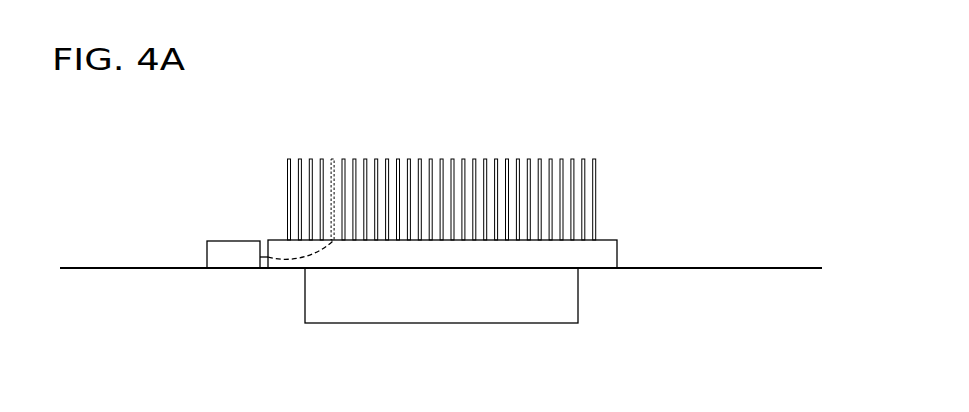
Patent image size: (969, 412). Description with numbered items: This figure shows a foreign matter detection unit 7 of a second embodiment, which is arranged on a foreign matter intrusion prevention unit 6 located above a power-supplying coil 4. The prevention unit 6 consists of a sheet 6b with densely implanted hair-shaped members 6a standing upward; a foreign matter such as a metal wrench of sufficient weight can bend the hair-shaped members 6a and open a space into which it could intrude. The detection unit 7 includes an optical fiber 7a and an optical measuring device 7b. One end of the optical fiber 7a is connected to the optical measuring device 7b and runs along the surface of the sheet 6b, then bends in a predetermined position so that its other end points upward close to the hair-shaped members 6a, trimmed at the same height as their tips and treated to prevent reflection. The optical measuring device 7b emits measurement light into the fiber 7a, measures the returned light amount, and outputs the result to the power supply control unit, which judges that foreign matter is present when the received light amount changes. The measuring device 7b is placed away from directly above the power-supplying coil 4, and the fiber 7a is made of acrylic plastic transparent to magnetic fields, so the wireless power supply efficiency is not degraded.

The power-supplying coil 4 is at (578, 294).
The foreign matter intrusion prevention unit 6 is at (475, 213).
The hair-shaped members 6a is at (465, 252).
The sheet 6b is at (617, 255).
The foreign matter detection unit 7 is at (207, 217).
The optical fiber 7a is at (283, 268).
The optical measuring device 7b is at (207, 255).